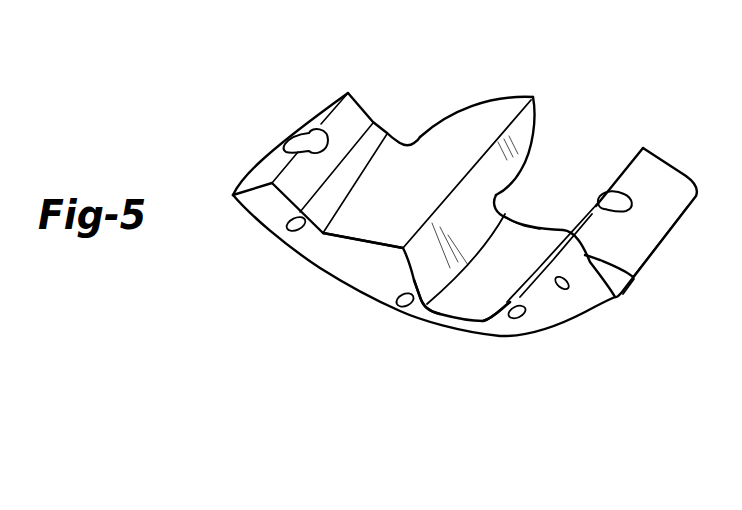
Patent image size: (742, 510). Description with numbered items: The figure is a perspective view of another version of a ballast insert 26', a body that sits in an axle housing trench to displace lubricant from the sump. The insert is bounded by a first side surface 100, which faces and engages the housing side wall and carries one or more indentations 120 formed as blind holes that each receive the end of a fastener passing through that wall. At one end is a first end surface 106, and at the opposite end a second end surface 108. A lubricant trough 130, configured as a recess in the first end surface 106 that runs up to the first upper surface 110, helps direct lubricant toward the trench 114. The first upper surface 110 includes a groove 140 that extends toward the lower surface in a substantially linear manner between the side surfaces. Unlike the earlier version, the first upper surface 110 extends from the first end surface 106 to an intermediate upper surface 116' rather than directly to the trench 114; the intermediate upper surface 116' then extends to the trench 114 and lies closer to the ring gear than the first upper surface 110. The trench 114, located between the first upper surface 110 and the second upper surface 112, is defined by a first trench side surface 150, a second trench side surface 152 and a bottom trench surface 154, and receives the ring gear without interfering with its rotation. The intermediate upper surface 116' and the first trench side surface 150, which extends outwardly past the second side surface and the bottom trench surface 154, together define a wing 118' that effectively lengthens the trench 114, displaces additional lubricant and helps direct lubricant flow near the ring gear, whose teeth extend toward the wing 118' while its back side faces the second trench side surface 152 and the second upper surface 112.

The ballast insert 26' is at (652, 42).
The first side surface 100 is at (424, 259).
The first end surface 106 is at (268, 144).
The second end surface 108 is at (654, 205).
The first upper surface 110 is at (366, 136).
The second upper surface 112 is at (539, 252).
The trench 114 is at (546, 214).
The intermediate upper surface 116' is at (322, 256).
The wing 118' is at (478, 180).
The indentations 120 is at (414, 288).
The lubricant trough 130 is at (464, 139).
The groove 140 is at (533, 186).
The first trench side surface 150 is at (542, 146).
The second trench side surface 152 is at (486, 349).
The bottom trench surface 154 is at (432, 326).